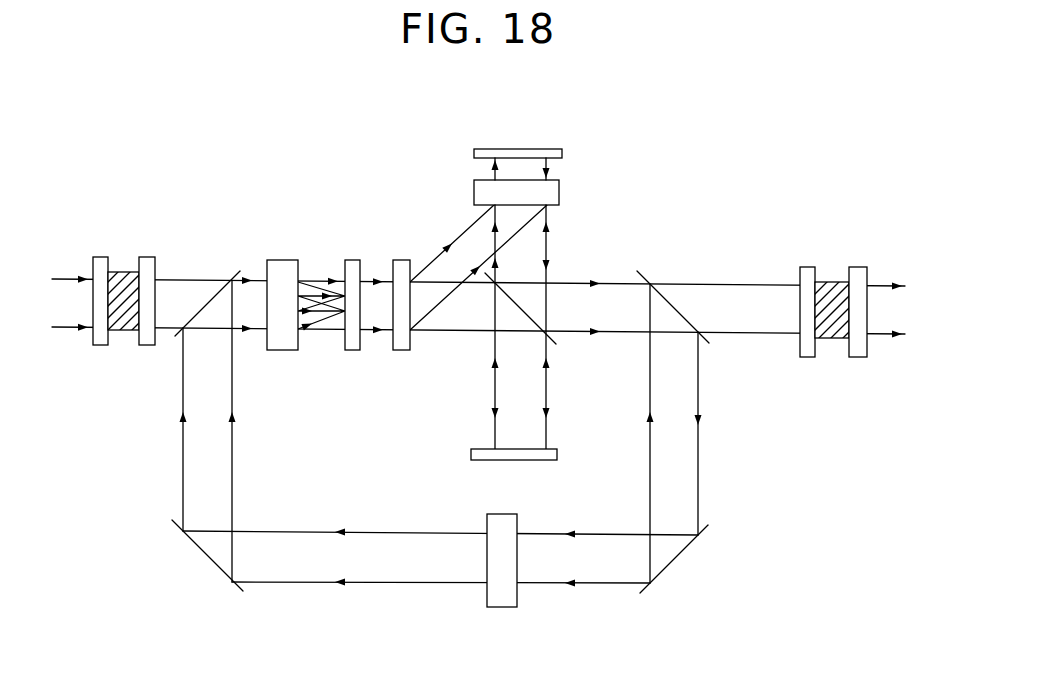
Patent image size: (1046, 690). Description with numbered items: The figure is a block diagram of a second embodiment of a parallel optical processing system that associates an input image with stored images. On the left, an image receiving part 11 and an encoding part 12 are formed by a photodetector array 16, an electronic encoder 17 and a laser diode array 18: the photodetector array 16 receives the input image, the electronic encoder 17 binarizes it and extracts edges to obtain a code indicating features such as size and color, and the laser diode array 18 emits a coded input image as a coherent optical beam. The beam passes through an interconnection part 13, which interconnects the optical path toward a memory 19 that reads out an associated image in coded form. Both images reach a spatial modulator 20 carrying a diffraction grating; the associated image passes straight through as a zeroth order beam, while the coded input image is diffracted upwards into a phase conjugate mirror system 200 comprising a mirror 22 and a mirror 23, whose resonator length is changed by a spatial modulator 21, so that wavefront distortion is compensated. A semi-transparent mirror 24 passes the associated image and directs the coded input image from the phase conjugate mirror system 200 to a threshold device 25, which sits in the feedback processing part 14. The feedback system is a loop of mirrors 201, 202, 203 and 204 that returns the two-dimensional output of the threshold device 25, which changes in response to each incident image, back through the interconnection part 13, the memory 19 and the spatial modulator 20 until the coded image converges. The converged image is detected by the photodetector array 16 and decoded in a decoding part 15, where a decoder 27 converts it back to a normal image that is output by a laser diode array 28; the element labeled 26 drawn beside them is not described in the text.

The image receiving part 11 is at (119, 302).
The encoding part 12 is at (119, 302).
The interconnection part 13 is at (285, 260).
The feedback processing part 14 is at (493, 392).
The decoding part 15 is at (832, 311).
The photodetector array 16 is at (101, 257).
The electronic encoder 17 is at (127, 272).
The laser diode array 18 is at (151, 257).
The memory 19 is at (353, 260).
The spatial modulator 20 is at (402, 260).
The spatial modulator 21 is at (560, 193).
The mirror 22 is at (552, 149).
The mirror 23 is at (557, 455).
The semi-transparent mirror 24 is at (528, 313).
The threshold device 25 is at (503, 514).
The plate 26 is at (808, 267).
The decoder 27 is at (838, 282).
The laser diode array 28 is at (863, 267).
The phase conjugate mirror system 200 is at (556, 150).
The mirror 201 is at (668, 301).
The mirror 202 is at (685, 548).
The mirror 203 is at (210, 564).
The mirror 204 is at (216, 295).